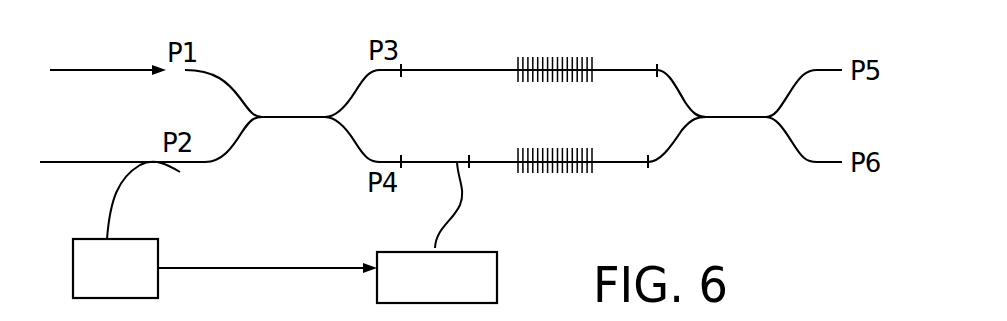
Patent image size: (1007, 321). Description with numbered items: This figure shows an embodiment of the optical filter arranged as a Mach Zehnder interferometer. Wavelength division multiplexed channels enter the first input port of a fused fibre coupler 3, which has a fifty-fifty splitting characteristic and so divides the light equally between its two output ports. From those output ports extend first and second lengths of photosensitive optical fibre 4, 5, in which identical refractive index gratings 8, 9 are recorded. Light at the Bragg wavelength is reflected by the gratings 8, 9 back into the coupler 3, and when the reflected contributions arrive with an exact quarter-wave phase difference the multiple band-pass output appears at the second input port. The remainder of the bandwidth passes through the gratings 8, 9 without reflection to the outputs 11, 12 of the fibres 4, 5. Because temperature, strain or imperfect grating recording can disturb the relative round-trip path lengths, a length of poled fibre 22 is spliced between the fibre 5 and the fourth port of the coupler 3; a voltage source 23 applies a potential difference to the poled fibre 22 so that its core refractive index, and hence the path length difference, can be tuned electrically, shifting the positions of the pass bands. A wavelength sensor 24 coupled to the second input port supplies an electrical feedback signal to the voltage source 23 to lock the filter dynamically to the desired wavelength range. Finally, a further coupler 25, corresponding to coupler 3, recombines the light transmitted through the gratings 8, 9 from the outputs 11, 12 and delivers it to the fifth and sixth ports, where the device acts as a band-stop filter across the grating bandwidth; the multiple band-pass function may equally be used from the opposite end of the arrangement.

The coupler 3 is at (285, 112).
The first length of photosensitive optical fibre 4 is at (472, 70).
The second length of photosensitive optical fibre 5 is at (498, 162).
The refractive index grating 8 is at (544, 82).
The refractive index grating 9 is at (557, 173).
The output of fibre 11 is at (657, 70).
The output of fibre 12 is at (648, 162).
The poled fibre 22 is at (425, 160).
The voltage source 23 is at (447, 292).
The wavelength sensor 24 is at (132, 284).
The further coupler 25 is at (745, 92).